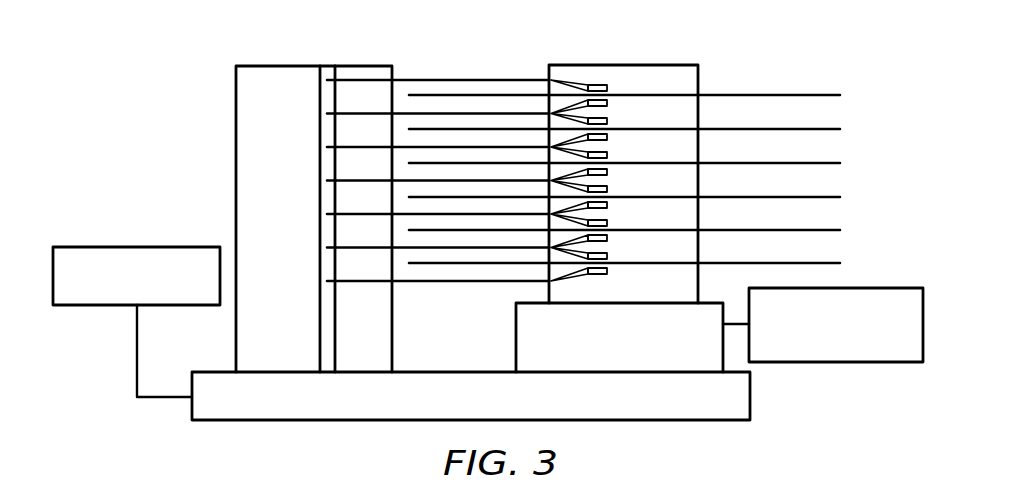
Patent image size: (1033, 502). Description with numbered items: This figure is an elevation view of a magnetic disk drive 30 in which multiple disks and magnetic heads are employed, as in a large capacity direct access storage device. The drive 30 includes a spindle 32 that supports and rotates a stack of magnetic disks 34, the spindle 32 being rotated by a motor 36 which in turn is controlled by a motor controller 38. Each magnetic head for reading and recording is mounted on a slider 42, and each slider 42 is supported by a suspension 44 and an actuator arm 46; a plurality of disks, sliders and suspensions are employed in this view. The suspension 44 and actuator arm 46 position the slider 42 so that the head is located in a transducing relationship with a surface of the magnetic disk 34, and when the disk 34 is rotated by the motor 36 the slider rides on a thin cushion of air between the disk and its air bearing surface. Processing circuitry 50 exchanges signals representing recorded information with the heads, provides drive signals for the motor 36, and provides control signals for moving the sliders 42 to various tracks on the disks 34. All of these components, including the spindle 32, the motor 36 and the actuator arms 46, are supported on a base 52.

The magnetic disk drive 30 is at (776, 34).
The spindle 32 is at (677, 64).
The magnetic disk 34 is at (815, 95).
The motor 36 is at (637, 347).
The motor controller 38 is at (860, 363).
The slider 42 is at (610, 97).
The suspension 44 is at (577, 108).
The actuator arm 46 is at (498, 112).
The processing circuitry 50 is at (115, 247).
The base 52 is at (313, 421).